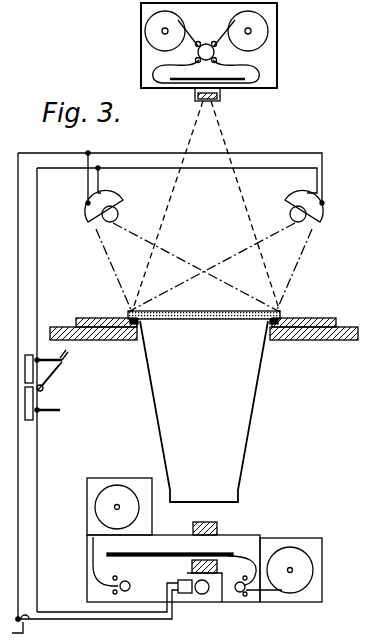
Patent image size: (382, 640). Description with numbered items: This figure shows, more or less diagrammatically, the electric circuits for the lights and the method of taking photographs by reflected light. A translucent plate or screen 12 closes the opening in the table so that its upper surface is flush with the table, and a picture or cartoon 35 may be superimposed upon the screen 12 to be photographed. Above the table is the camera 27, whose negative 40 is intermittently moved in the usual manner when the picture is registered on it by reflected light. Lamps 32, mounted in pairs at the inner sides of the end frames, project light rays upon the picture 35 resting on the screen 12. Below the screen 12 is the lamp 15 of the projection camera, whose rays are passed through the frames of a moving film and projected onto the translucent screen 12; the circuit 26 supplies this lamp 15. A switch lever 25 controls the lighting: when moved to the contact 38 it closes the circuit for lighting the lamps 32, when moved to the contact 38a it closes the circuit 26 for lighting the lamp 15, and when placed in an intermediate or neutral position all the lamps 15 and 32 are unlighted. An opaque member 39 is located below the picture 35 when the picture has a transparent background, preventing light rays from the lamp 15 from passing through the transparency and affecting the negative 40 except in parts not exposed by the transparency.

The camera 27 is at (277, 65).
The negative 40 is at (270, 78).
The lamps 32 is at (111, 223).
The circuit 26 is at (25, 498).
The opaque member 39 is at (283, 317).
The picture 35 is at (224, 312).
The translucent plate or screen 12 is at (193, 322).
The switch lever 25 is at (66, 352).
The contact 38 is at (55, 370).
The contact 38a is at (60, 410).
The lamp 15 is at (204, 595).